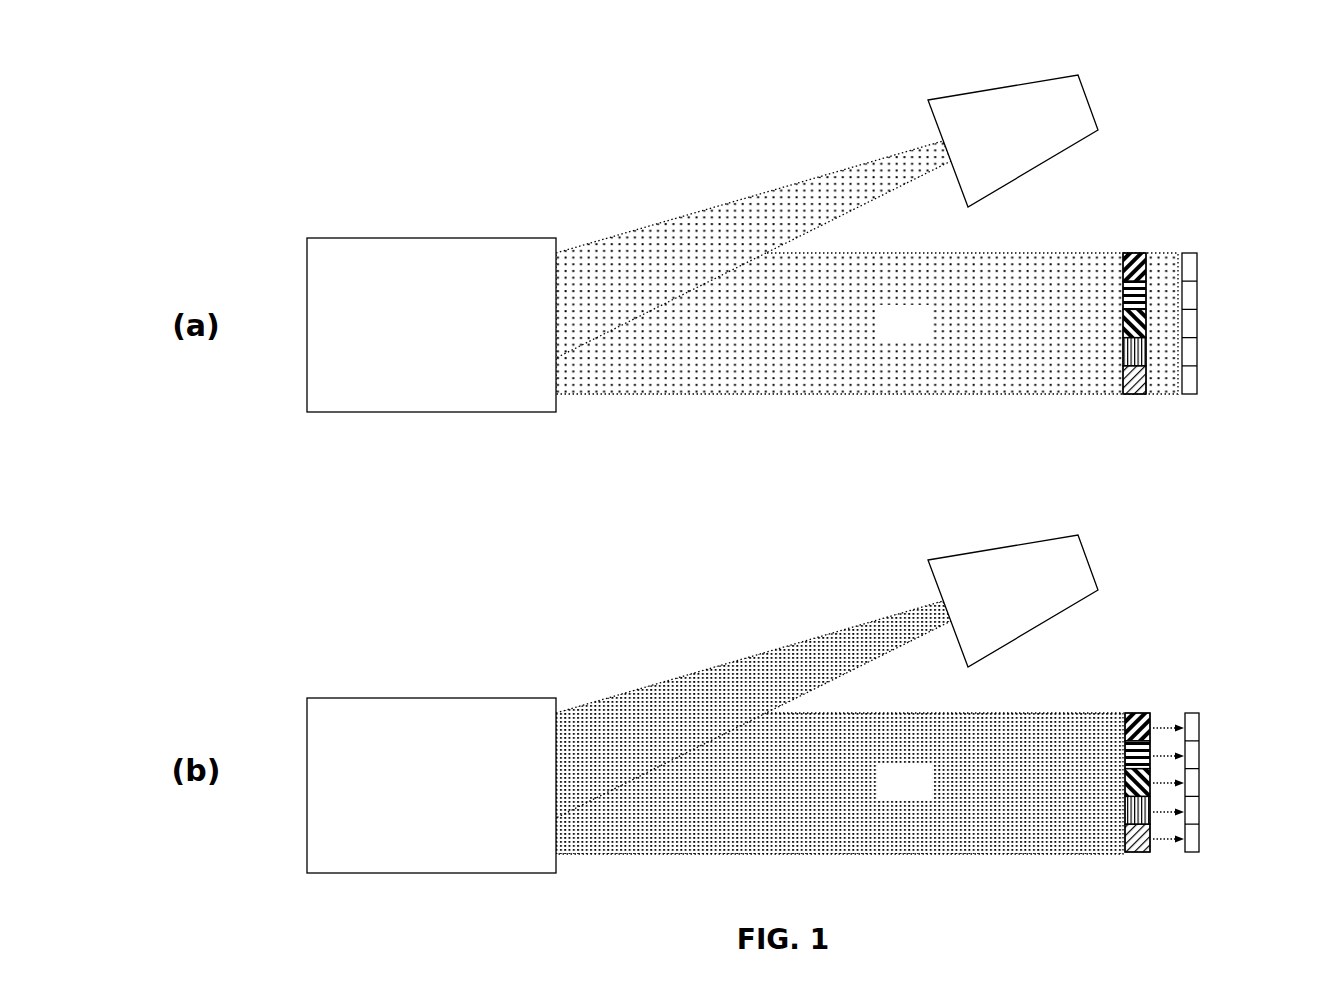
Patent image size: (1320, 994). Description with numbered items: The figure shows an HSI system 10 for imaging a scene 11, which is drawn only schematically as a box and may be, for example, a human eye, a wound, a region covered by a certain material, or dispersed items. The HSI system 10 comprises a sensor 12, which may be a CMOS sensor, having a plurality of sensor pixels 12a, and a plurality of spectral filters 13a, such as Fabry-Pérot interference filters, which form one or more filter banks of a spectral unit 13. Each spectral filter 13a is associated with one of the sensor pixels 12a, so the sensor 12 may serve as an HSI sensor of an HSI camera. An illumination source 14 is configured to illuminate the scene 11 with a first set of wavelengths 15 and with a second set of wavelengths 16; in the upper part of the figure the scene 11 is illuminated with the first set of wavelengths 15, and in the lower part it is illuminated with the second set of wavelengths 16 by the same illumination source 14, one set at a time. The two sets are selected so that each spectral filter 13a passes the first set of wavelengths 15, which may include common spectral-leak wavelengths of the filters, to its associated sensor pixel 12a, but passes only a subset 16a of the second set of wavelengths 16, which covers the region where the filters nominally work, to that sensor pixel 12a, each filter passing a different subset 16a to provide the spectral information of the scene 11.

The HSI system 10 is at (1136, 140).
The scene 11 is at (438, 237).
The sensor 12 is at (1197, 387).
The sensor pixel 12a is at (1190, 348).
The spectral unit 13 is at (1145, 843).
The spectral filter 13a is at (1137, 383).
The illumination source 14 is at (952, 98).
The first set of wavelengths 15 is at (720, 205).
The second set of wavelengths 16 is at (725, 665).
The subset of the second set of wavelengths 16a is at (1168, 723).